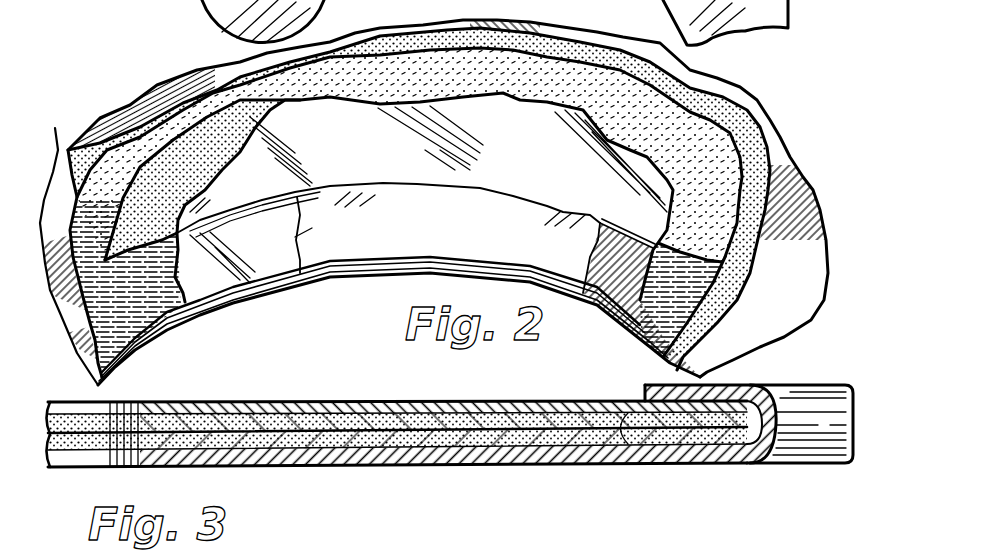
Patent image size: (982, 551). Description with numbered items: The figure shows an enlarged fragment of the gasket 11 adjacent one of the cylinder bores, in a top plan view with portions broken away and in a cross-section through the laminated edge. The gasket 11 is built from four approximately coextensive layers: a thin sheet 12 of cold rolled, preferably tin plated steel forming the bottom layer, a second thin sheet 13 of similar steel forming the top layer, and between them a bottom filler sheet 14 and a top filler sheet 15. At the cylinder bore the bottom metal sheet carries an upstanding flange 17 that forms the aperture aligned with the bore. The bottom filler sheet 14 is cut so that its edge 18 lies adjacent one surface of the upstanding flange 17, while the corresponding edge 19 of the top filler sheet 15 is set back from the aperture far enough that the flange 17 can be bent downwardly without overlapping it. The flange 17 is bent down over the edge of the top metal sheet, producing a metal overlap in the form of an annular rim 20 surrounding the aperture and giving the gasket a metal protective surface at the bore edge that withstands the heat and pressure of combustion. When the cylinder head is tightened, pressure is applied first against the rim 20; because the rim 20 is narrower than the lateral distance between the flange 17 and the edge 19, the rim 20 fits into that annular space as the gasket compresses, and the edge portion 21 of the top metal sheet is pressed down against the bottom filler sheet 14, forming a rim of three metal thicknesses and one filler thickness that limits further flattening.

In FIG. 2, the gasket 11 is at (835, 103).
In FIG. 3, the gasket 11 is at (843, 378).
In FIG. 2, the thin sheet 12 is at (56, 130).
In FIG. 3, the thin sheet 12 is at (332, 466).
In FIG. 2, the second thin sheet 13 is at (368, 128).
In FIG. 3, the second thin sheet 13 is at (415, 420).
In FIG. 2, the bottom filler sheet 14 is at (102, 160).
In FIG. 3, the bottom filler sheet 14 is at (430, 445).
In FIG. 2, the top filler sheet 15 is at (173, 160).
In FIG. 3, the top filler sheet 15 is at (352, 408).
In FIG. 2, the upstanding flange 17 is at (222, 310).
In FIG. 3, the upstanding flange 17 is at (770, 405).
In FIG. 2, the edge 18 is at (660, 360).
In FIG. 3, the edge 18 is at (764, 412).
In FIG. 2, the edge 19 is at (745, 270).
In FIG. 3, the edge 19 is at (605, 447).
In FIG. 2, the annular rim 20 is at (385, 253).
In FIG. 3, the annular rim 20 is at (648, 391).
In FIG. 2, the edge portion 21 is at (255, 265).
In FIG. 3, the edge portion 21 is at (714, 414).